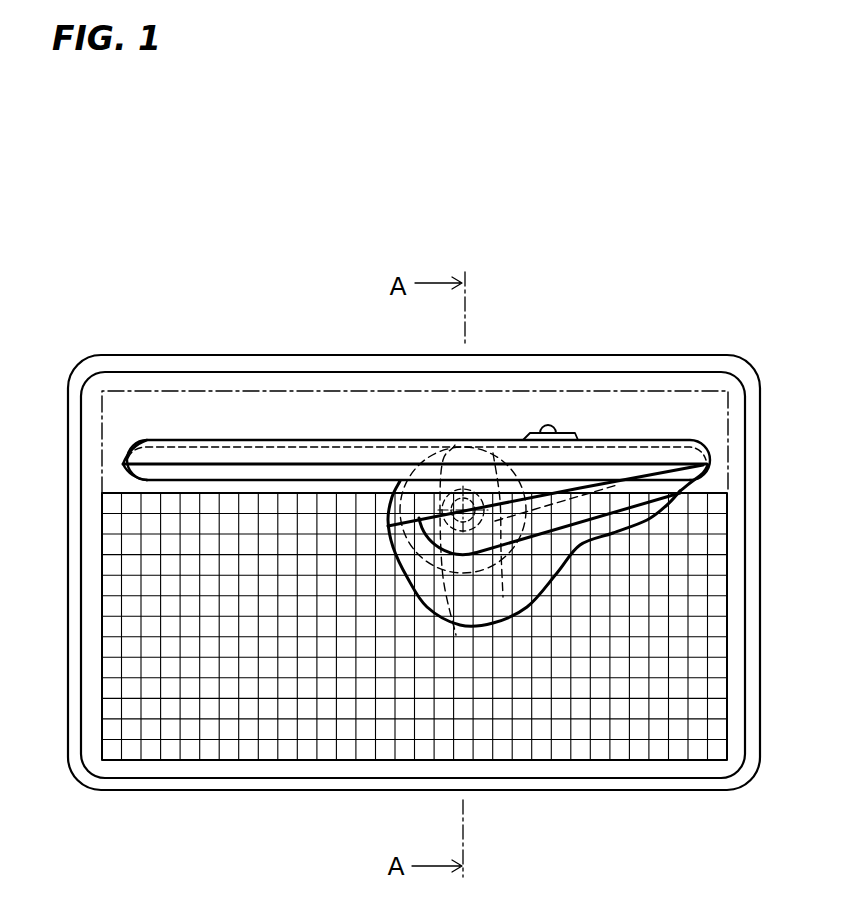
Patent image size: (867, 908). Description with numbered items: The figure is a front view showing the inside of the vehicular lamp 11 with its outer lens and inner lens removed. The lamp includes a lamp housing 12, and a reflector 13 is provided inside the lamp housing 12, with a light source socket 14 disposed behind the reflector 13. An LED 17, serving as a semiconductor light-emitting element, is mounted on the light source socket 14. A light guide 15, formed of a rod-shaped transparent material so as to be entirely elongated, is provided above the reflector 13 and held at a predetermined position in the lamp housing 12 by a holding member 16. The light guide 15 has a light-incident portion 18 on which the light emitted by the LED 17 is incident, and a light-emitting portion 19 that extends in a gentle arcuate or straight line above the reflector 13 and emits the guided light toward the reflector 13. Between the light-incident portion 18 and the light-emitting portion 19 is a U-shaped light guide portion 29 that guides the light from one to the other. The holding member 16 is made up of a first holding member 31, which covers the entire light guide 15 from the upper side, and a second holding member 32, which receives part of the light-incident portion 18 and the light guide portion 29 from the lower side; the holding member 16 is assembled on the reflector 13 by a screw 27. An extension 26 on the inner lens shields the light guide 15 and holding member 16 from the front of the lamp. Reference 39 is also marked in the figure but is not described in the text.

The vehicular lamp 11 is at (307, 320).
The lamp housing 12 is at (248, 792).
The reflector 13 is at (637, 762).
The light source socket 14 is at (456, 635).
The light guide 15 is at (623, 484).
The holding member 16 is at (608, 433).
The LED 17 is at (503, 597).
The light-incident portion 18 is at (455, 448).
The light-emitting portion 19 is at (228, 481).
The extension 26 is at (170, 391).
The screw 27 is at (552, 428).
The light guide portion 29 is at (710, 480).
The first holding member 31 is at (400, 504).
The second holding member 32 is at (398, 548).
The handle inner rib 39 is at (223, 455).